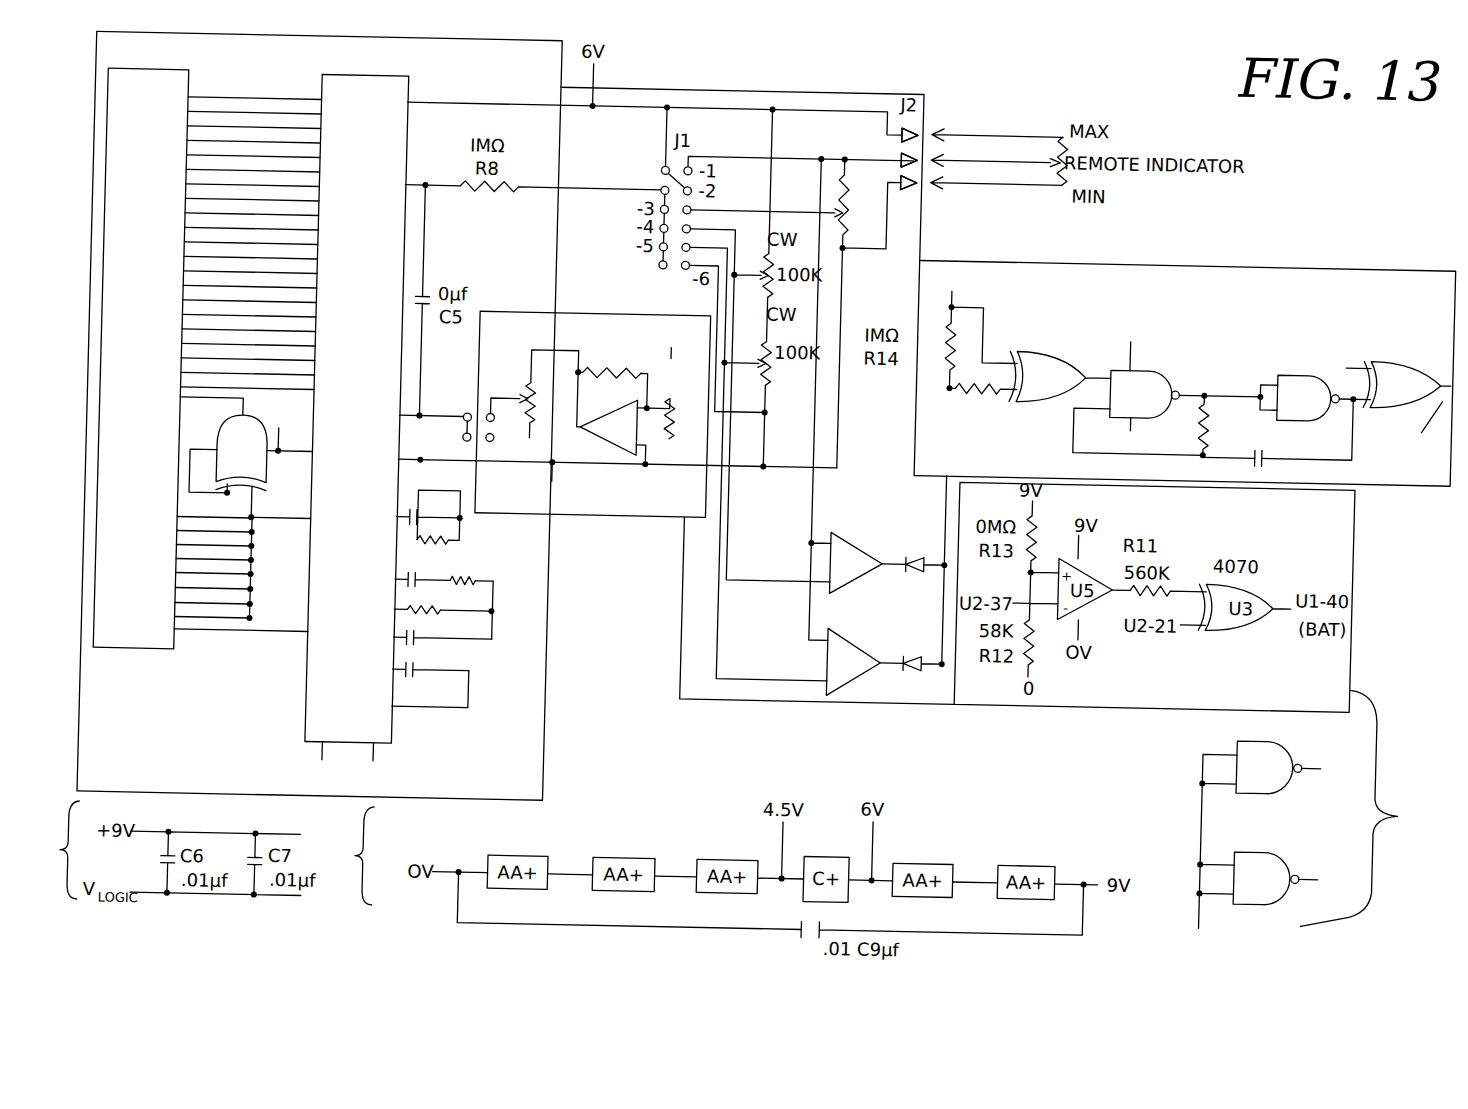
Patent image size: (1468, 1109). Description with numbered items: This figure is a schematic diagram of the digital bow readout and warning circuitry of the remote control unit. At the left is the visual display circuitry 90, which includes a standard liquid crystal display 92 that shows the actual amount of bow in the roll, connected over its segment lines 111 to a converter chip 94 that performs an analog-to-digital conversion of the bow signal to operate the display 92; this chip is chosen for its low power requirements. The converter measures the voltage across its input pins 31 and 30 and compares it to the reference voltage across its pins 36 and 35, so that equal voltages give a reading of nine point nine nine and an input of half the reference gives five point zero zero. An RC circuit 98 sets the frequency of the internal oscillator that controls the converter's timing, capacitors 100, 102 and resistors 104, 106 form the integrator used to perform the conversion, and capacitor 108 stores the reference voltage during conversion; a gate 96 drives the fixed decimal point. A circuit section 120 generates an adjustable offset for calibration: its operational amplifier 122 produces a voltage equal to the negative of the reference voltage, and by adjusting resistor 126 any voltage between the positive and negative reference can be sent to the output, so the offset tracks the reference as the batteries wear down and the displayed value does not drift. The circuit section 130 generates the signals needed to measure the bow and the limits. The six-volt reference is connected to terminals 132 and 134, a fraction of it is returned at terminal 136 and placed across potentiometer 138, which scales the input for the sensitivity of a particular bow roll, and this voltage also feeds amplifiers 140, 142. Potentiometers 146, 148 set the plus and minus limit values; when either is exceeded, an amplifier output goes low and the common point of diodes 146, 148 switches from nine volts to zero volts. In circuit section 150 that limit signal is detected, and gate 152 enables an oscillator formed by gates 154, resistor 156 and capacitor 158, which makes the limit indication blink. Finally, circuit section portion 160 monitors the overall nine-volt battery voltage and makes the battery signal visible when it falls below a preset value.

The visual display circuitry 90 is at (564, 731).
The liquid crystal display 92 is at (124, 362).
The converter chip 94 is at (346, 301).
The gate 96 is at (243, 455).
The RC circuit 98 is at (482, 511).
The capacitor 100 is at (409, 575).
The capacitor 102 is at (409, 656).
The resistor 104 is at (496, 577).
The resistor 106 is at (409, 605).
The capacitor 108 is at (409, 674).
The display segment lines 111 is at (227, 243).
The circuit section 120 is at (585, 444).
The operational amplifier 122 is at (644, 392).
The resistor 126 is at (534, 405).
The circuit section 130 is at (730, 686).
The terminal 132 is at (936, 108).
The terminal 134 is at (940, 173).
The terminal 136 is at (929, 153).
The potentiometer 138 is at (852, 221).
The amplifier 140 is at (857, 563).
The amplifier 142 is at (853, 662).
The potentiometer and diode 146 is at (771, 238).
The potentiometer and diode 148 is at (778, 361).
The circuit section 150 is at (1185, 350).
The gate 152 is at (1045, 365).
The gates 154 is at (1136, 381).
The resistor 156 is at (1228, 426).
The capacitor 158 is at (1262, 437).
The circuit section portion 160 is at (1279, 827).
The input pin 30 is at (414, 398).
The input pin 31 is at (433, 175).
The pin 35 is at (410, 467).
The pin 36 is at (423, 94).